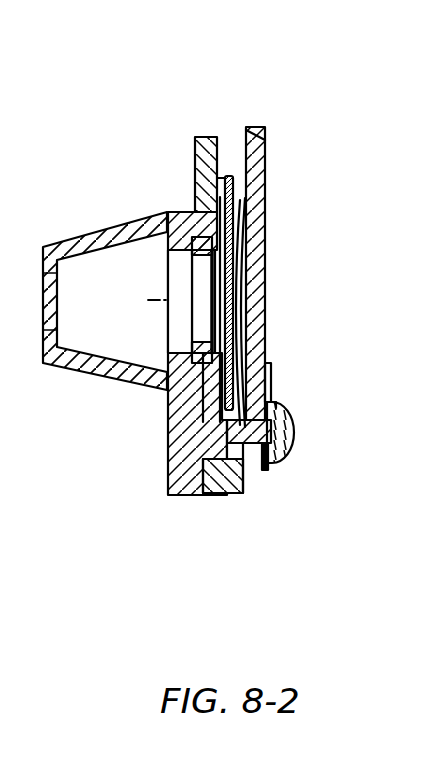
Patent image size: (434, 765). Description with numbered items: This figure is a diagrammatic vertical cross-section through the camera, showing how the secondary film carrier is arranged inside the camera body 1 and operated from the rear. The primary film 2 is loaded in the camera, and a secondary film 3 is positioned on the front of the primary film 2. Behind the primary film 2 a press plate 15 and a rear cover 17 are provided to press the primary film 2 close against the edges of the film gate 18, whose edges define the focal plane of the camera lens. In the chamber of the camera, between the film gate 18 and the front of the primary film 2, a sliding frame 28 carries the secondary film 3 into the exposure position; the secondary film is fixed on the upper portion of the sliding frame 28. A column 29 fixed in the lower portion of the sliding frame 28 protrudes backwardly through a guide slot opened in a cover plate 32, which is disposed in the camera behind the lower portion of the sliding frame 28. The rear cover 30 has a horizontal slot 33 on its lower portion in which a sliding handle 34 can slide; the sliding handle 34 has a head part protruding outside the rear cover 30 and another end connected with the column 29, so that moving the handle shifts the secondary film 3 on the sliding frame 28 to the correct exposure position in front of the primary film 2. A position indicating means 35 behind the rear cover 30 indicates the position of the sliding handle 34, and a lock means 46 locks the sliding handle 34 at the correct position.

The camera body 1 is at (194, 174).
The primary film 2 is at (238, 232).
The secondary film 3 is at (213, 288).
The press plate 15 is at (232, 185).
The rear cover 17 is at (250, 208).
The film gate 18 is at (193, 209).
The sliding frame 28 is at (200, 470).
The column 29 is at (185, 429).
The rear cover 30 is at (266, 135).
The cover plate 32 is at (245, 493).
The horizontal slot 33 is at (265, 470).
The sliding handle 34 is at (288, 462).
The position indicating means 35 is at (271, 372).
The lock means 46 is at (275, 401).